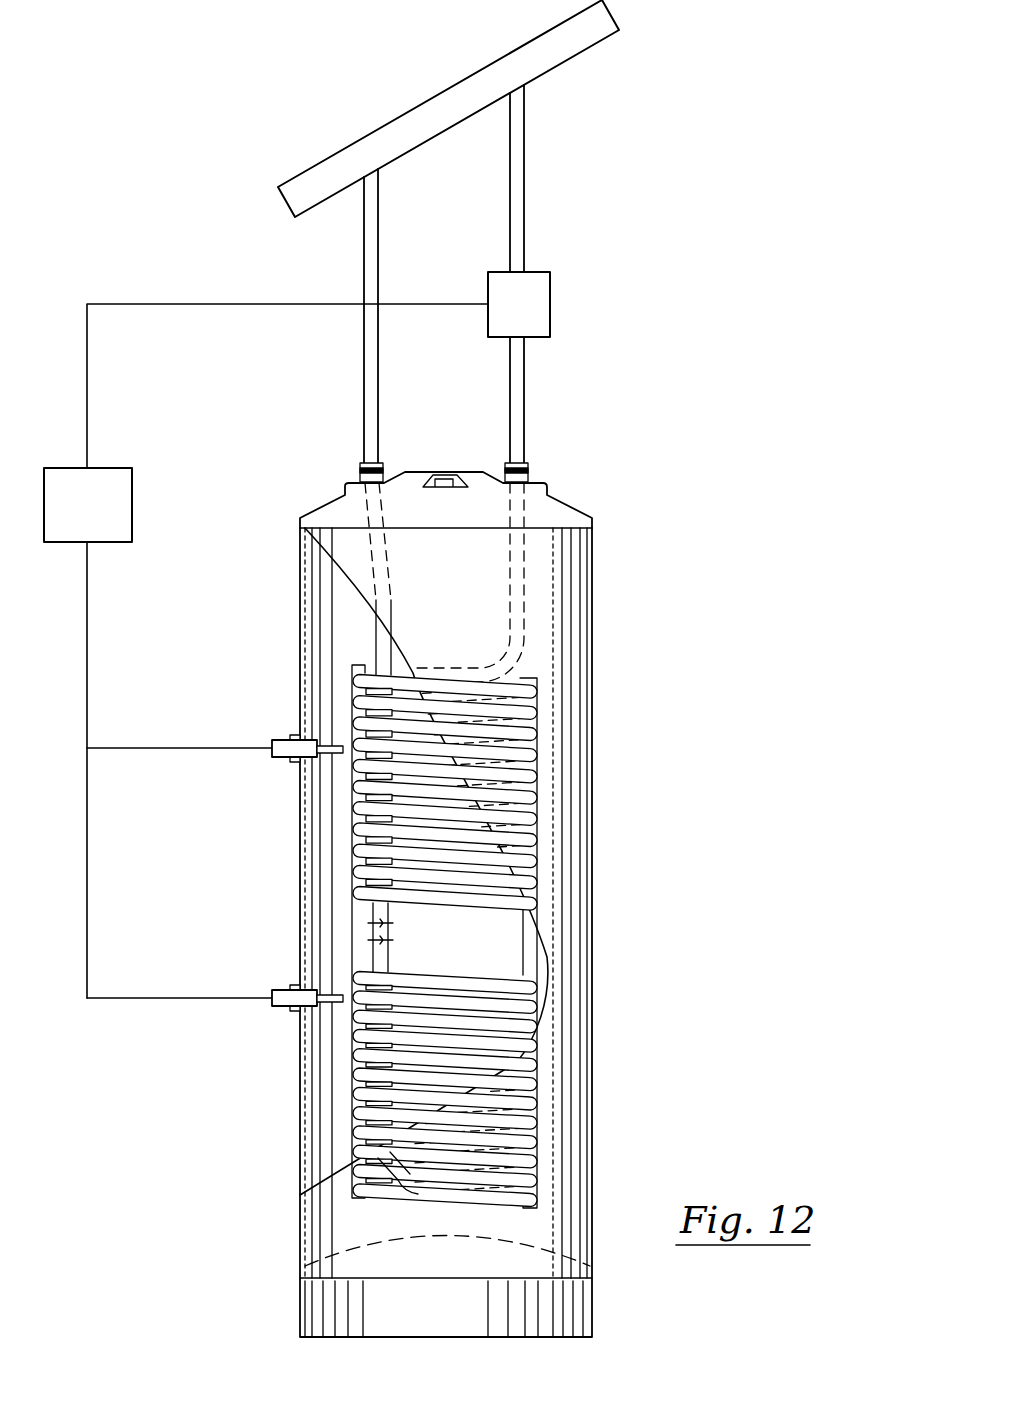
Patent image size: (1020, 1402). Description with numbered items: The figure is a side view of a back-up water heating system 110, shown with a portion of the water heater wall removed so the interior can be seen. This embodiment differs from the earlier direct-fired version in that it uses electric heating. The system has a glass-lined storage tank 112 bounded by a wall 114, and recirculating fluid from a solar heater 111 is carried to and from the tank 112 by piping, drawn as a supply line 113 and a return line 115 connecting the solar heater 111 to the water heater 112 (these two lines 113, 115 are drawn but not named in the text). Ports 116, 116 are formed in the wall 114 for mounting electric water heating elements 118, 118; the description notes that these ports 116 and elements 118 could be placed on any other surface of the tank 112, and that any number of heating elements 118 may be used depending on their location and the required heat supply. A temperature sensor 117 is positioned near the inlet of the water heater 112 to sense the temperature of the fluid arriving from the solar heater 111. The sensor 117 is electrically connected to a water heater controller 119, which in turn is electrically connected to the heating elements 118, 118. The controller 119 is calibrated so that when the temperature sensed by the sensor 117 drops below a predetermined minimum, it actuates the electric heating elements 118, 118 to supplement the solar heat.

The back-up water heating system 110 is at (289, 1085).
The solar heater 111 is at (423, 102).
The glass-lined storage tank 112 is at (593, 862).
The supply pipe 113 is at (529, 86).
The wall 114 is at (334, 855).
The return pipe 115 is at (367, 187).
The ports 116 is at (296, 740).
The temperature sensor 117 is at (541, 272).
The electric water heating elements 118 is at (275, 757).
The water heater controller 119 is at (107, 468).